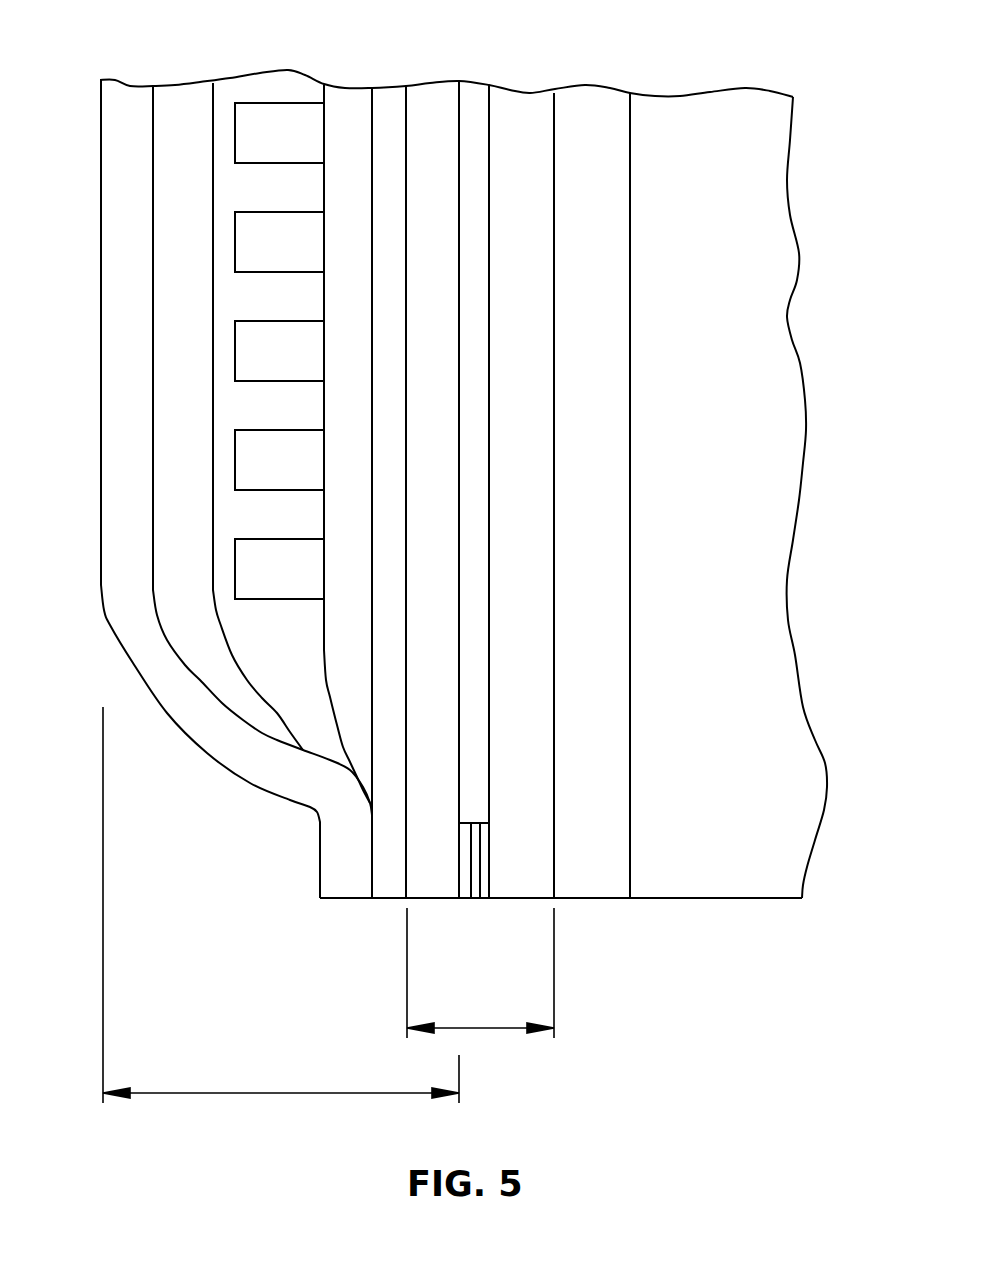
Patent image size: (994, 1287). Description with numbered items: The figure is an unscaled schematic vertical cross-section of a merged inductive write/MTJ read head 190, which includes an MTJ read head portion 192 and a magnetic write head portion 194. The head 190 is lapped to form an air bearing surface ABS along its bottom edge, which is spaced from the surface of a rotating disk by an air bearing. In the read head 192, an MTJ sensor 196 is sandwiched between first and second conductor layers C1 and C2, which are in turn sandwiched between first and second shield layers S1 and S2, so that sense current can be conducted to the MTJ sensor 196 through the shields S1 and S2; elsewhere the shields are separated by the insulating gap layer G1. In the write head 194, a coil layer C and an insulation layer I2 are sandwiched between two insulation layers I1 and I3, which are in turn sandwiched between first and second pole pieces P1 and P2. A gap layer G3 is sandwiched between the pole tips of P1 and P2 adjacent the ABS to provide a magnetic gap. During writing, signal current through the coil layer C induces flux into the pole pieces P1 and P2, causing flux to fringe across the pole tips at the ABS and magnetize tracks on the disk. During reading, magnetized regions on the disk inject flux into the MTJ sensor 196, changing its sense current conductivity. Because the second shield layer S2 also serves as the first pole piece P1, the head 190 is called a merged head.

The read/write head 190 is at (668, 57).
The MTJ read head portion 192 is at (493, 1029).
The magnetic write head portion 194 is at (158, 1094).
The MTJ sensor 196 is at (478, 870).
The second pole piece P2 is at (236, 489).
The third insulation layer I3 is at (228, 416).
The second insulation layer I2 is at (291, 443).
The first insulation layer I1 is at (348, 491).
The gap layer G3 is at (388, 97).
The second shield layer S2 is at (432, 489).
The first pole piece P1 is at (432, 489).
The insulating gap layer G1 is at (475, 93).
The first shield layer S1 is at (521, 491).
The coil layer C is at (279, 351).
The first conductor layer C1 is at (485, 842).
The second conductor layer C2 is at (463, 847).
The air bearing surface ABS is at (737, 899).